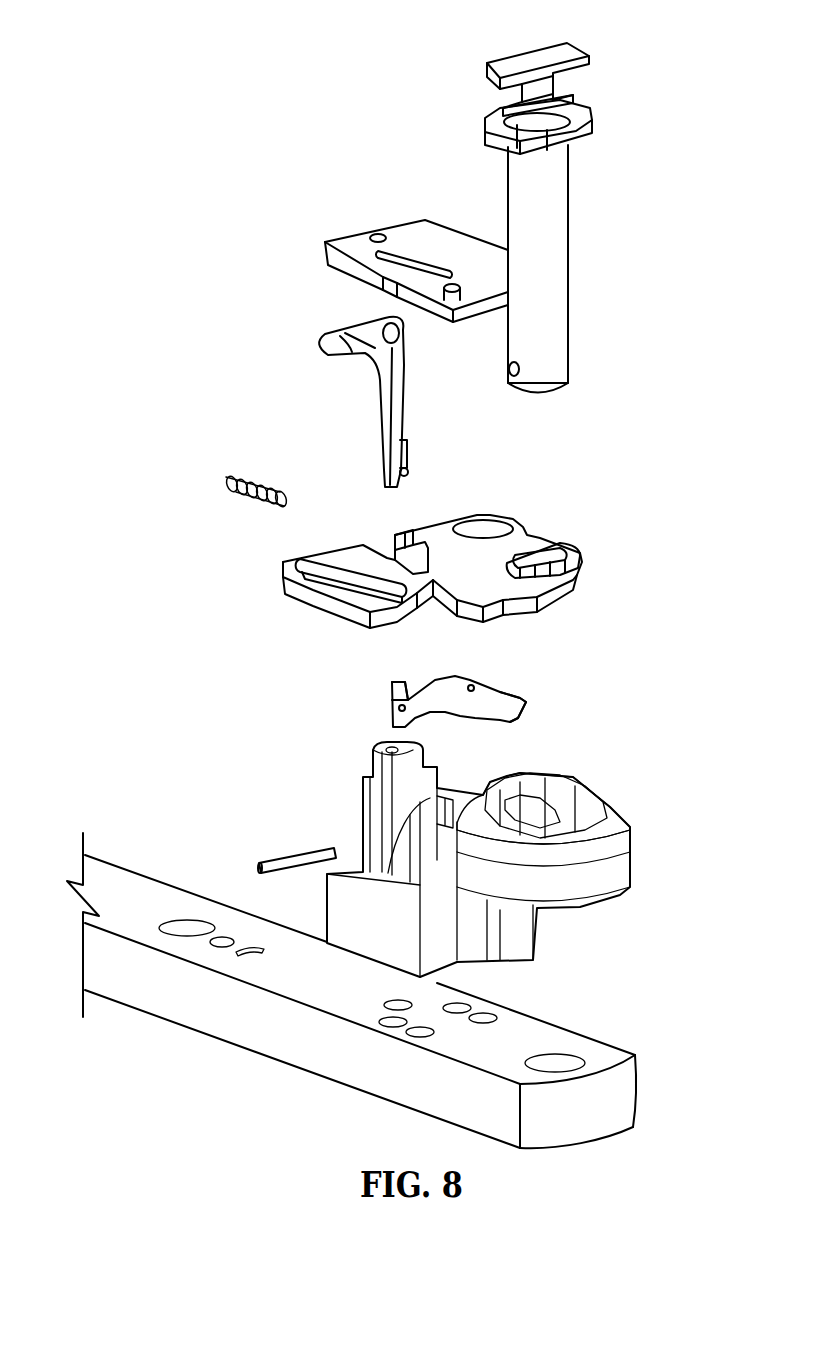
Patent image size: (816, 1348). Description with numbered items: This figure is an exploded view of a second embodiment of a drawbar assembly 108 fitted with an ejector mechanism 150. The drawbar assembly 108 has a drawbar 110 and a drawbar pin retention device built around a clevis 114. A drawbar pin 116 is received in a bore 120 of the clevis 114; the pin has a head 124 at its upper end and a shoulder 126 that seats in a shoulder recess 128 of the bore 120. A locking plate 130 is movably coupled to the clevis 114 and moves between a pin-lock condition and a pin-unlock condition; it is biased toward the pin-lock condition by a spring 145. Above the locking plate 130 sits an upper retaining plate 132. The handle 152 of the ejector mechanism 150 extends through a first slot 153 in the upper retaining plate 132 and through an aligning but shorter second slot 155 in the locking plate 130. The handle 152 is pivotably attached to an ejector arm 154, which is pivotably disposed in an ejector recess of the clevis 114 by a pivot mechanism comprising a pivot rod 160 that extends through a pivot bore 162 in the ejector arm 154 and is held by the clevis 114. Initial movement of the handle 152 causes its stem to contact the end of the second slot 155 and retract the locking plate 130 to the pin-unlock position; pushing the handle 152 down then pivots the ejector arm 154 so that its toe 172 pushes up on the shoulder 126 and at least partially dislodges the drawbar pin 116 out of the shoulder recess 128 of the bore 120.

The drawbar assembly 108 is at (103, 1074).
The drawbar 110 is at (612, 1140).
The clevis 114 is at (538, 844).
The drawbar pin 116 is at (560, 258).
The bore 120 is at (557, 822).
The T-shaped head 124 is at (580, 53).
The shoulder 126 is at (588, 120).
The shoulder recess 128 is at (553, 824).
The locking plate 130 is at (470, 566).
The upper retaining plate 132 is at (380, 237).
The spring 145 is at (250, 477).
The ejector mechanism 150 is at (180, 324).
The handle 152 is at (350, 327).
The first slot 153 is at (370, 232).
The ejector arm 154 is at (508, 696).
The second slot 155 is at (433, 570).
The pivot rod 160 is at (307, 852).
The pivot bore 162 is at (448, 676).
The toe 172 is at (523, 693).